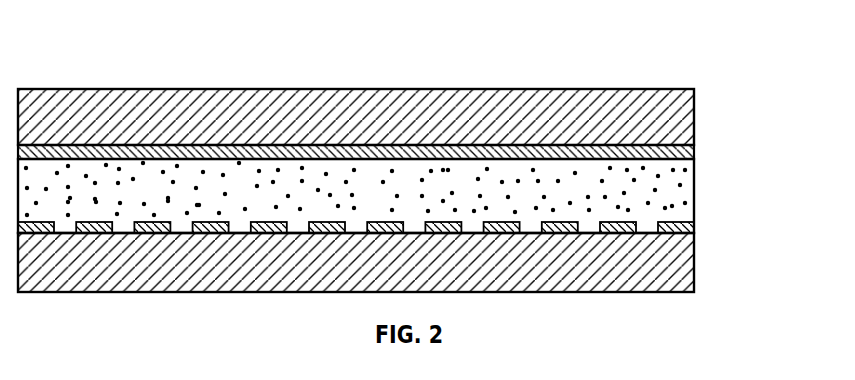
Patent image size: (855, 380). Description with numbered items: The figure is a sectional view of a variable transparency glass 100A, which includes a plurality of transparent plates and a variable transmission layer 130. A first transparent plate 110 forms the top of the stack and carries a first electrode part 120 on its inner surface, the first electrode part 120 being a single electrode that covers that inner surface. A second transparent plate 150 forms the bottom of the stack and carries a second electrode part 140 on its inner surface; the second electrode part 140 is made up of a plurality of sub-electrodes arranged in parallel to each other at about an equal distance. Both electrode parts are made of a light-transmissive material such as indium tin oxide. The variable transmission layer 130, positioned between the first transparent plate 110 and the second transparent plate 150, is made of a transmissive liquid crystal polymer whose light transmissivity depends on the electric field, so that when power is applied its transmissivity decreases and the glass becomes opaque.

The variable transparency glass 100A is at (422, 58).
The first transparent plate 110 is at (682, 120).
The first electrode part 120 is at (688, 150).
The variable transmission layer 130 is at (683, 192).
The second electrode part 140 is at (686, 228).
The second transparent plate 150 is at (683, 262).